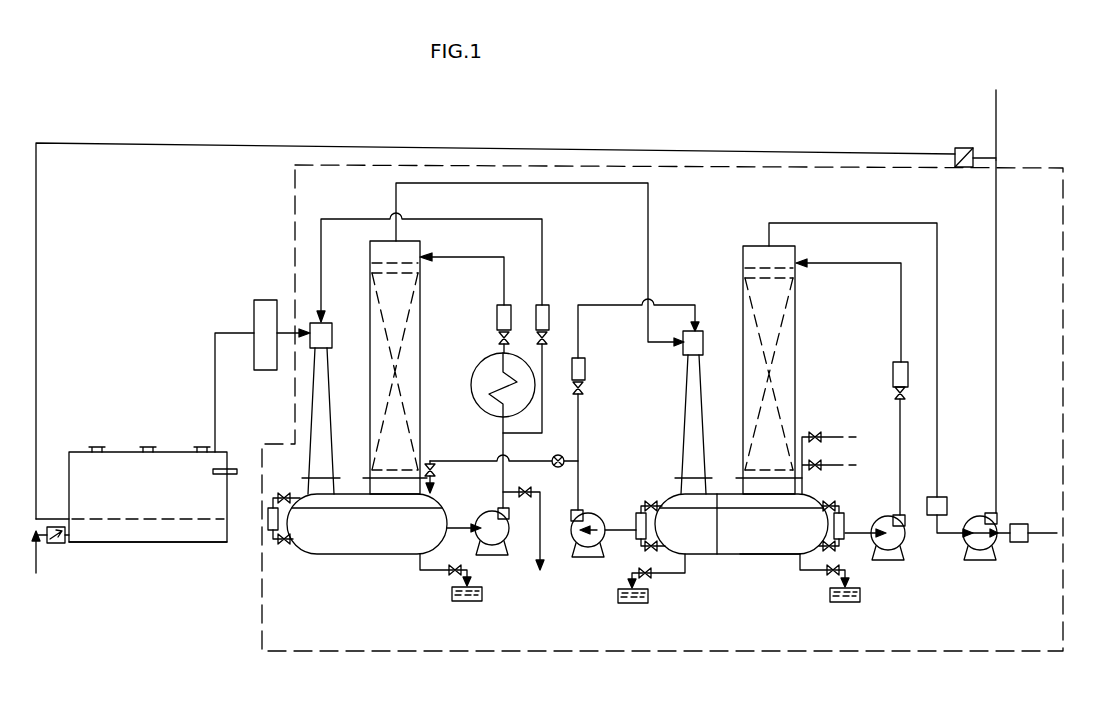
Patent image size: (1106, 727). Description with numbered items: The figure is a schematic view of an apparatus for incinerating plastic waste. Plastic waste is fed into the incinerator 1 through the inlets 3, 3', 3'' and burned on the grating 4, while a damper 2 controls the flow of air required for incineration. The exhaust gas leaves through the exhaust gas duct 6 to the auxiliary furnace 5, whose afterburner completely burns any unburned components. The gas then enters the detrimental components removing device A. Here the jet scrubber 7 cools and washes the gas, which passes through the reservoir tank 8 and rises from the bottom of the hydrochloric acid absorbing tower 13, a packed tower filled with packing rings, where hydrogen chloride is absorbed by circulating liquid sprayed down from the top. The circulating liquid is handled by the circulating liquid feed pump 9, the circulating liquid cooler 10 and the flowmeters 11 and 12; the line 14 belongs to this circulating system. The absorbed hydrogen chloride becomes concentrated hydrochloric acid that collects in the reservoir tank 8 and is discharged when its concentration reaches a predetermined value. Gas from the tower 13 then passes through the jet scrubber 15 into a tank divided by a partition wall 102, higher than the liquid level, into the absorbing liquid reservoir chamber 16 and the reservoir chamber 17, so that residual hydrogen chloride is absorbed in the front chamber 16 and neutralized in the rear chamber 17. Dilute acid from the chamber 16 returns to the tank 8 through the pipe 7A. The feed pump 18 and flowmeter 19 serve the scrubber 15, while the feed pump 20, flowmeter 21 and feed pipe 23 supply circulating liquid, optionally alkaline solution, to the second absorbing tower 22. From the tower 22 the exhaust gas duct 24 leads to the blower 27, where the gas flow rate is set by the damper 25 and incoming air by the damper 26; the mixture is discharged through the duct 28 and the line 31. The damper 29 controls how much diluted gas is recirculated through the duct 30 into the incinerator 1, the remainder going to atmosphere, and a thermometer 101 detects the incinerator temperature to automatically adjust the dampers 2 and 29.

The incinerator 1 is at (228, 517).
The damper 2 is at (57, 545).
The inlet 3 is at (97, 430).
The inlet 3' is at (149, 430).
The inlet 3'' is at (198, 430).
The grating 4 is at (170, 533).
The auxiliary furnace 5 is at (265, 300).
The exhaust gas duct 6 is at (212, 355).
The jet scrubber 7 is at (332, 336).
The pipe 7A is at (462, 461).
The reservoir tank 8 is at (350, 548).
The circulating liquid feed pump 9 is at (507, 530).
The circulating liquid cooler 10 is at (471, 383).
The flowmeter 11 is at (496, 318).
The flowmeter 12 is at (549, 320).
The hydrochloric acid absorbing tower 13 is at (421, 295).
The conduit 14 is at (538, 218).
The jet scrubber 15 is at (704, 336).
The absorbing liquid reservoir chamber 16 is at (710, 556).
The reservoir chamber 17 is at (766, 556).
The feed pump 18 is at (598, 515).
The flowmeter 19 is at (586, 372).
The feed pump 20 is at (903, 546).
The flowmeter 21 is at (892, 378).
The second absorbing tower 22 is at (797, 347).
The feed pipe 23 is at (858, 262).
The exhaust gas duct 24 is at (858, 222).
The damper 25 is at (947, 505).
The damper 26 is at (1018, 545).
The blower 27 is at (996, 522).
The duct 28 is at (997, 332).
The damper 29 is at (957, 148).
The duct 30 is at (693, 150).
The supply conduit 31 is at (1012, 125).
The thermometer 101 is at (228, 466).
The partition wall 102 is at (720, 540).
The detrimental components removing device A is at (1047, 281).